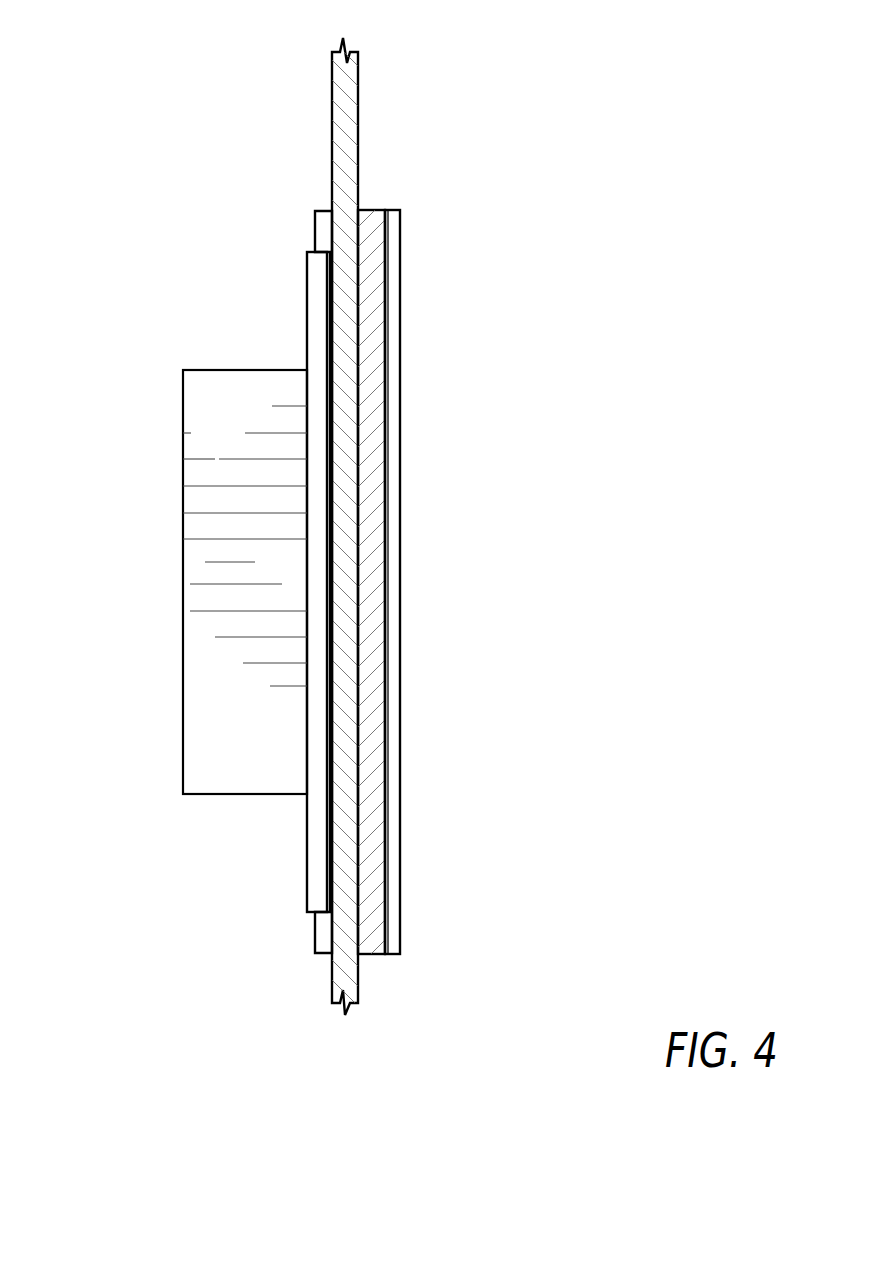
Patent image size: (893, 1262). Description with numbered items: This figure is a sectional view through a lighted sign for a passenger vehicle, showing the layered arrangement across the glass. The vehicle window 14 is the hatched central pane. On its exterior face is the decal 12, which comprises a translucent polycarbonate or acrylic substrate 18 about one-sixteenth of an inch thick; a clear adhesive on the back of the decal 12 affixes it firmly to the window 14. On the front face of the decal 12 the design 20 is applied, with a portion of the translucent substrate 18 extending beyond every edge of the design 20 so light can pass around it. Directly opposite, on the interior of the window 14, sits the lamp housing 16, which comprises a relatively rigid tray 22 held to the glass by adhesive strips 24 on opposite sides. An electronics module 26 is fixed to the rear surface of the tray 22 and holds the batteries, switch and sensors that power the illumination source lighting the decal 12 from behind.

The decal 12 is at (402, 317).
The vehicle window 14 is at (343, 117).
The lamp housing 16 is at (191, 794).
The substrate 18 is at (370, 957).
The design 20 is at (401, 543).
The tray 22 is at (322, 955).
The adhesive strips 24 is at (322, 887).
The electronics module 26 is at (220, 582).